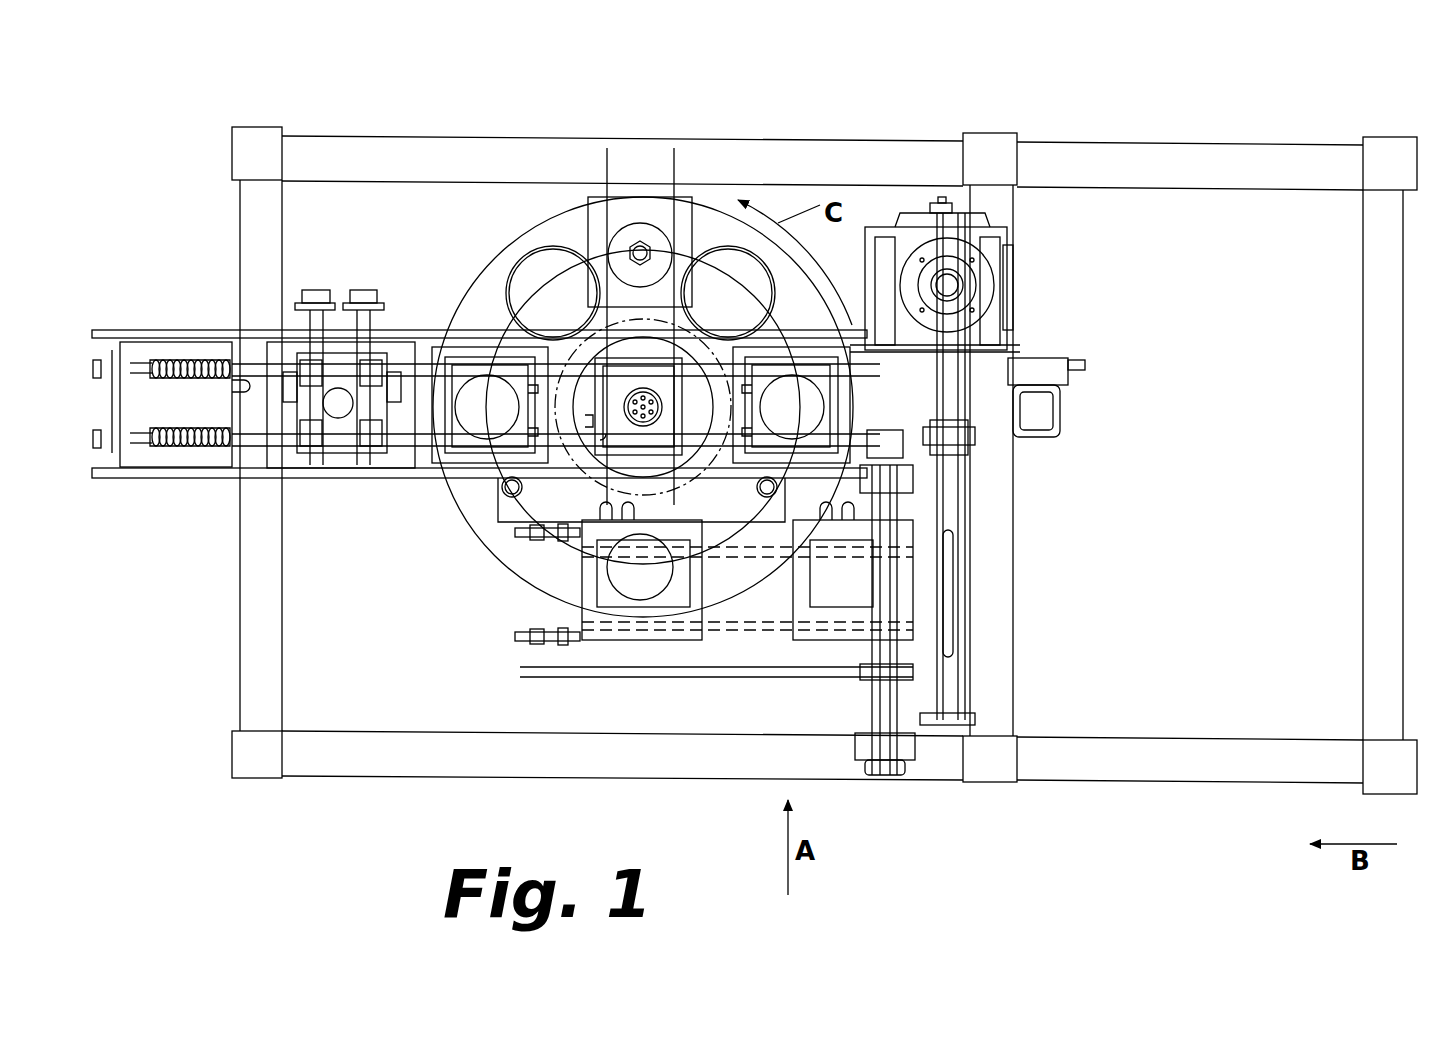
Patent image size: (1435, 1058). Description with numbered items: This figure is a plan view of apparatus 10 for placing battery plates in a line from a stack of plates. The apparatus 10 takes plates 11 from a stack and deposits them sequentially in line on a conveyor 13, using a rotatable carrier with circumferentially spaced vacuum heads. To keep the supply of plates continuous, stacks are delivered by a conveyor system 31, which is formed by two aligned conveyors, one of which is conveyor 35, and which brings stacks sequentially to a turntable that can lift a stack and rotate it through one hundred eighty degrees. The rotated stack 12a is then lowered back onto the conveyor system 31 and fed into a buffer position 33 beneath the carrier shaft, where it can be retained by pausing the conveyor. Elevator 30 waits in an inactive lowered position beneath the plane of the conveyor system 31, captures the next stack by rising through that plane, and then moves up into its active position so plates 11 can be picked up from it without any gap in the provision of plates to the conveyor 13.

The apparatus 10 is at (940, 813).
The plates 11 is at (573, 606).
The rotated stack 12a is at (624, 358).
The conveyor 13 is at (500, 588).
The elevator 30 is at (425, 455).
The conveyor system 31 is at (160, 307).
The buffer position 33 is at (702, 227).
The conveyor 35 is at (108, 482).